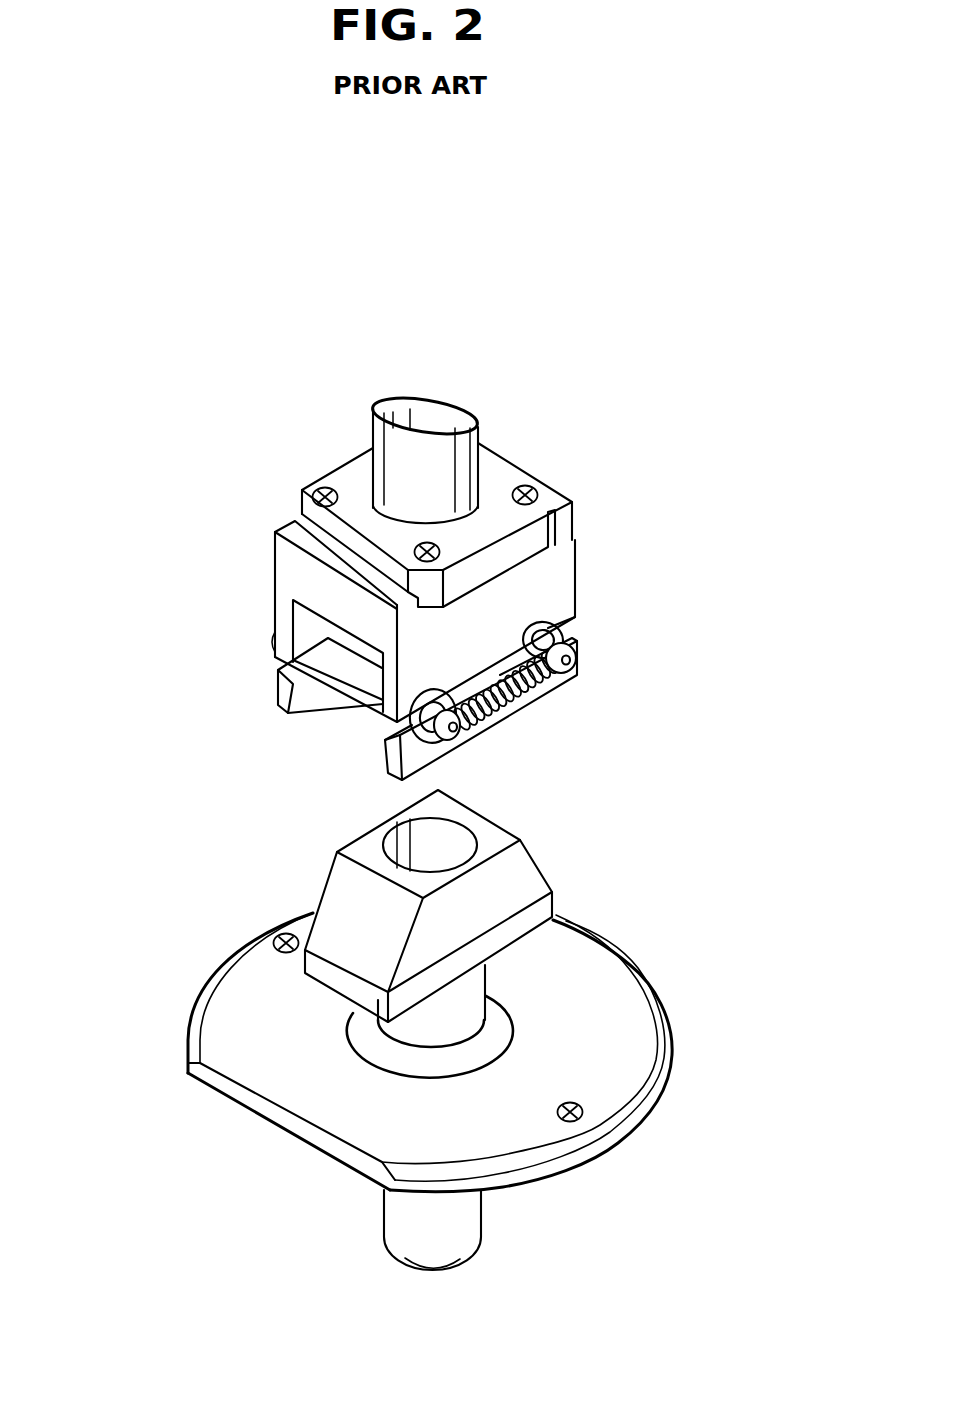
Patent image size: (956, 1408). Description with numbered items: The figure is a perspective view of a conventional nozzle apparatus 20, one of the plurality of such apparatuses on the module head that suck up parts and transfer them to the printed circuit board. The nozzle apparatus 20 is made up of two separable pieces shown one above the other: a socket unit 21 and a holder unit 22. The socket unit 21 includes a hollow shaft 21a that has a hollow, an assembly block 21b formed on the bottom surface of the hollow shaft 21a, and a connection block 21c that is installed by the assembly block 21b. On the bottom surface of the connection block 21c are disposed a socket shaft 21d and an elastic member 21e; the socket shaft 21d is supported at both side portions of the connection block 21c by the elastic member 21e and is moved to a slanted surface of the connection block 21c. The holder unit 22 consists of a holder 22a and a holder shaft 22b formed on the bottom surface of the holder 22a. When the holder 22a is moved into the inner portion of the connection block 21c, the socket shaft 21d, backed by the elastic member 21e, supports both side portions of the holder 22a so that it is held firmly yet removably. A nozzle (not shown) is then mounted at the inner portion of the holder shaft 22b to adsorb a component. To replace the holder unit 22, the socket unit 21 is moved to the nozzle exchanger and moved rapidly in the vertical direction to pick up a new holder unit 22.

The nozzle apparatus 20 is at (458, 266).
The socket unit 21 is at (565, 445).
The hollow shaft 21a is at (388, 468).
The assembly block 21b is at (508, 552).
The connection block 21c is at (553, 598).
The socket shaft 21d is at (368, 683).
The elastic member 21e is at (507, 710).
The holder unit 22 is at (193, 935).
The holder 22a is at (520, 875).
The holder shaft 22b is at (458, 1220).